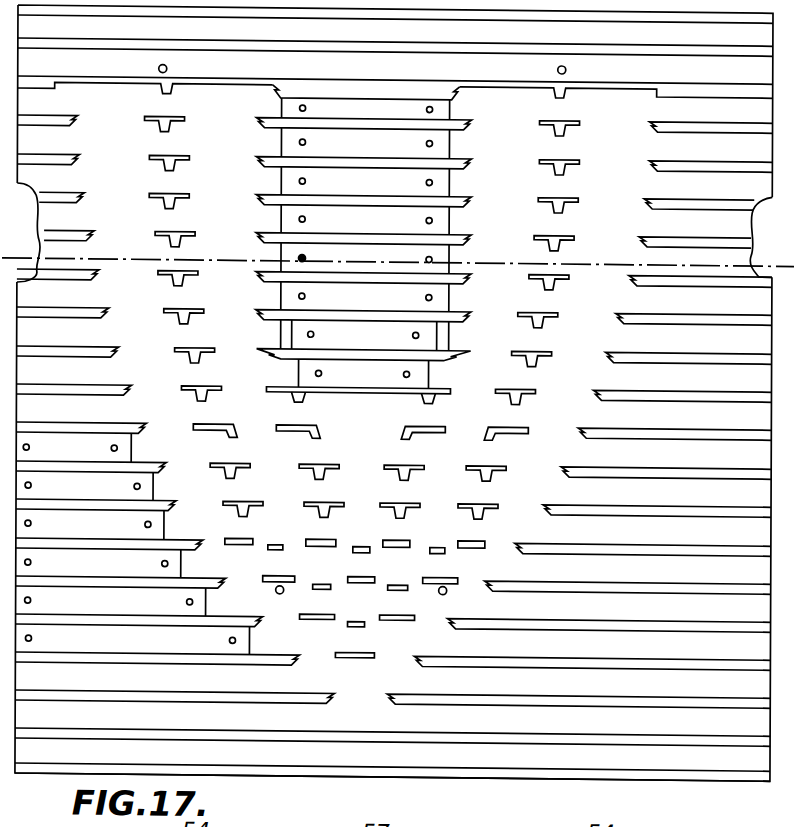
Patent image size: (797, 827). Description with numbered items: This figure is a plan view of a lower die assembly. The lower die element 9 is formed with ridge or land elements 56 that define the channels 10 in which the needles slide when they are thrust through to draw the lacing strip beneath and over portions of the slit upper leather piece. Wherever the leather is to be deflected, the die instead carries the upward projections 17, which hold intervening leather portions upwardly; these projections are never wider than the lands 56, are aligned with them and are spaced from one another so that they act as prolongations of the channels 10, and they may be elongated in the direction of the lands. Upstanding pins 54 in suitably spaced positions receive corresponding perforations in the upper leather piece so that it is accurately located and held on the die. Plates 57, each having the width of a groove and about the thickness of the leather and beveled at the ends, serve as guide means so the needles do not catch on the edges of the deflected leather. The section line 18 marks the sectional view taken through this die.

The lower die element 9 is at (433, 773).
The channels 10 is at (394, 393).
The upward projections 17 is at (358, 664).
The section line 18- 18 is at (775, 224).
The upstanding pins 54 is at (461, 598).
The ridge or land elements 56 is at (100, 657).
The plate 57 is at (190, 510).